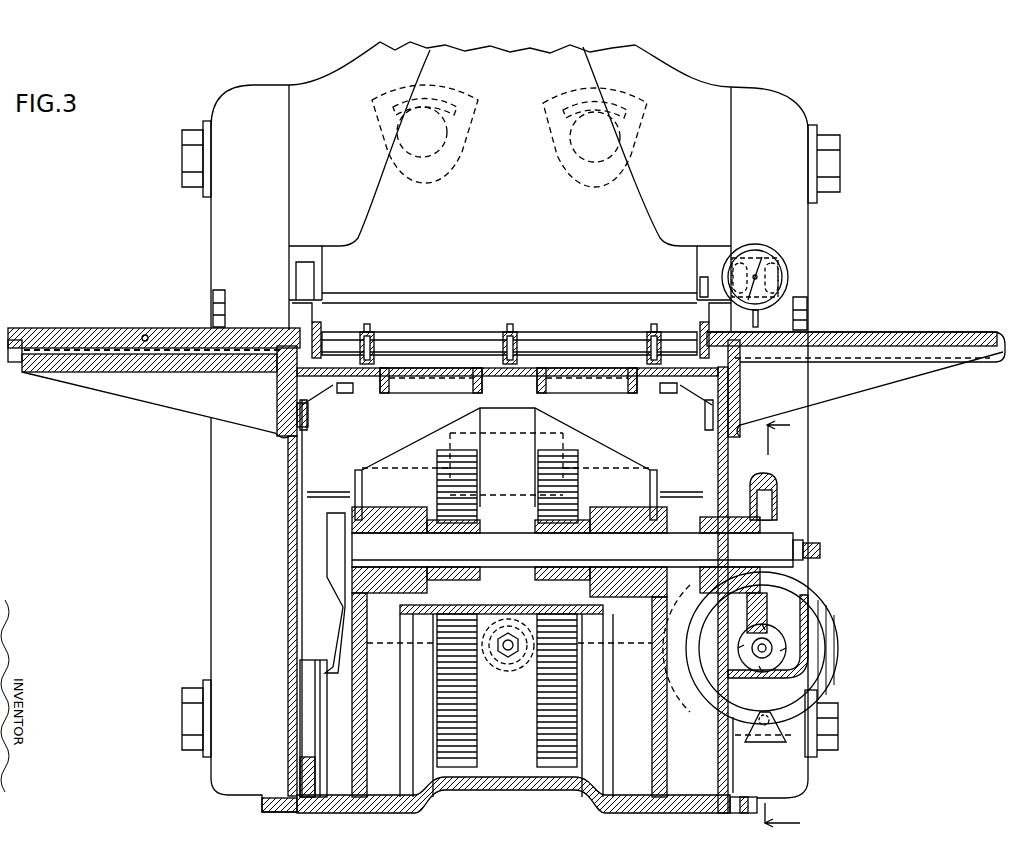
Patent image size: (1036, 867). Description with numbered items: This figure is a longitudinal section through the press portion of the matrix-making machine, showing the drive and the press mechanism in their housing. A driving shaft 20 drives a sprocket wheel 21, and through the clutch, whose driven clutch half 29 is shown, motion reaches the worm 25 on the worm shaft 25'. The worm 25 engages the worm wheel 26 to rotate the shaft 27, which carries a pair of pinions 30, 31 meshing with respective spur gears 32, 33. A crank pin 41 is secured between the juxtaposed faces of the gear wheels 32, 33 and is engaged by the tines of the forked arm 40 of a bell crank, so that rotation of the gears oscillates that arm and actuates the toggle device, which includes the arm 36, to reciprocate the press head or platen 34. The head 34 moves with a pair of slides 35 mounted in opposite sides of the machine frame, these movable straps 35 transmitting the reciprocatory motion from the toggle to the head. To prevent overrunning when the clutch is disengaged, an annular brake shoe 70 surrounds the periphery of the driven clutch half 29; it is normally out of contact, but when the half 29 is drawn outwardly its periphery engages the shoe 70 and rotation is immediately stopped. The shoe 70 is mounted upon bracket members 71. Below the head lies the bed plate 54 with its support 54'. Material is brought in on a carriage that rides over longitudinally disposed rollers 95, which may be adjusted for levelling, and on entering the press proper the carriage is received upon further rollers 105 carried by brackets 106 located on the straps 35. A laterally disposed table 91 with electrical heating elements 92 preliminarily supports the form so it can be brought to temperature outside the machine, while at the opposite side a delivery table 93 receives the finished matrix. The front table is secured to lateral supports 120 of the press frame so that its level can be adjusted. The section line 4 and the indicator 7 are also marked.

The section line 4- 4 is at (790, 625).
The gauge 7 is at (755, 285).
The driving shaft 20 is at (509, 660).
The sprocket wheel 21 is at (500, 662).
The worm 25 is at (768, 644).
The worm shaft 25' is at (806, 608).
The worm wheel 26 is at (775, 487).
The shaft 27 is at (768, 550).
The driven clutch half 29 is at (820, 628).
The pinion 30 is at (438, 512).
The pinion 31 is at (580, 507).
The spur gear 32 is at (472, 725).
The spur gear 33 is at (543, 708).
The press head or platen 34 is at (509, 281).
The slides 35 is at (212, 232).
The toggle arm 36 is at (343, 608).
The forked arm 40 is at (447, 428).
The crank pin 41 is at (498, 493).
The bed plate 54 is at (509, 330).
The support 54' is at (492, 590).
The annular brake shoe 70 is at (841, 652).
The bracket members 71 is at (757, 745).
The table 91 is at (45, 328).
The electrical heating elements 92 is at (62, 348).
The delivery table 93 is at (994, 332).
The rollers 95 is at (368, 331).
The rollers 105 is at (315, 328).
The brackets 106 is at (299, 300).
The lateral supports 120 is at (336, 386).